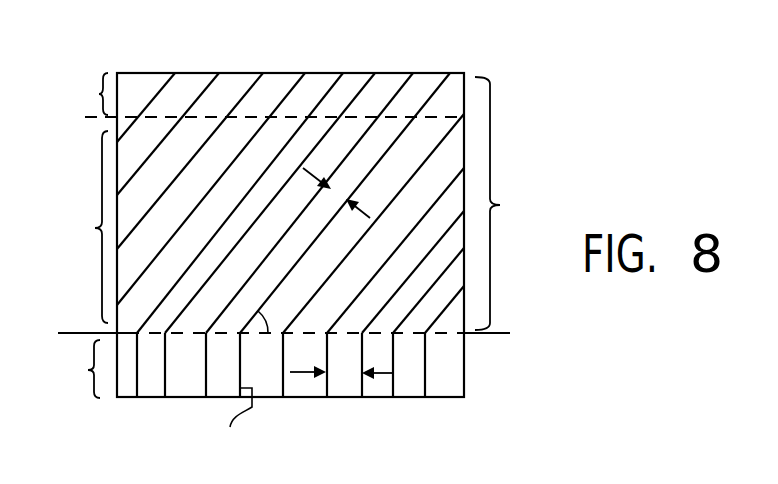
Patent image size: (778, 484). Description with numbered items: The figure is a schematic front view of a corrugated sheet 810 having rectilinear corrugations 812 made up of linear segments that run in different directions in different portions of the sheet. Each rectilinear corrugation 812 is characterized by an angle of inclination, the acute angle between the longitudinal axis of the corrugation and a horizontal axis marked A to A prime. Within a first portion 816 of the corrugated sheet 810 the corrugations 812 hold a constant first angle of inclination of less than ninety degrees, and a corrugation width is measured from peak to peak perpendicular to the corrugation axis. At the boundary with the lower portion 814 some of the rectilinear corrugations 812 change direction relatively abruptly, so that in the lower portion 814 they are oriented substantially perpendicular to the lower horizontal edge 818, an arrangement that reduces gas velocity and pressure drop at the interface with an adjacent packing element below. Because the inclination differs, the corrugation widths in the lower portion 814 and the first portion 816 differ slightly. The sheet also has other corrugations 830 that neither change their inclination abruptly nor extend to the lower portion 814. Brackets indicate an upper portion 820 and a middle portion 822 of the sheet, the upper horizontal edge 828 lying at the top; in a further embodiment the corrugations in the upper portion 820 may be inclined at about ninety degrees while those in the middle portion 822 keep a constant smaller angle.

The corrugated sheet 810 is at (553, 130).
The rectilinear corrugations 812 is at (350, 88).
The lower portion 814 is at (238, 394).
The first portion 816 is at (506, 203).
The lower horizontal edge 818 is at (303, 398).
The upper portion 820 is at (265, 95).
The middle portion 822 is at (291, 239).
The upper horizontal edge 828 is at (287, 72).
The other corrugations 830 is at (176, 150).